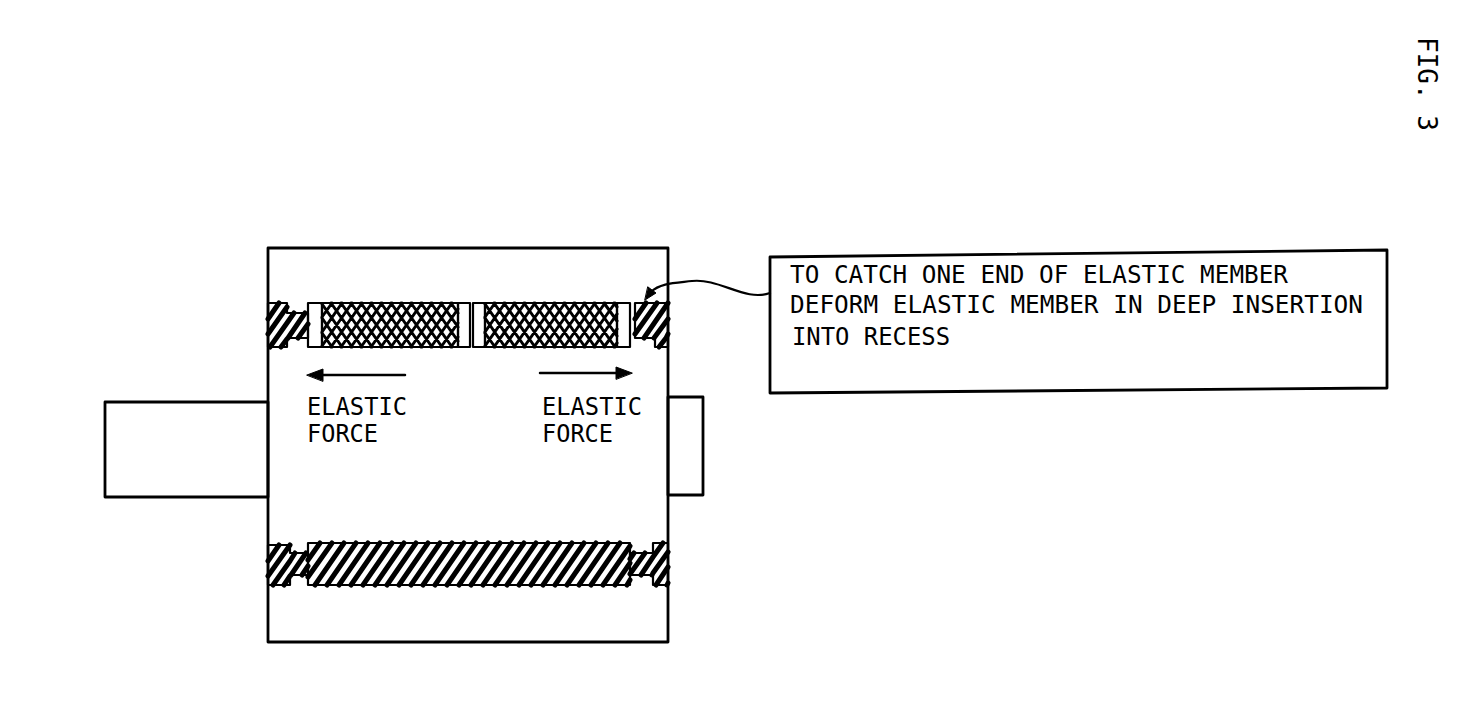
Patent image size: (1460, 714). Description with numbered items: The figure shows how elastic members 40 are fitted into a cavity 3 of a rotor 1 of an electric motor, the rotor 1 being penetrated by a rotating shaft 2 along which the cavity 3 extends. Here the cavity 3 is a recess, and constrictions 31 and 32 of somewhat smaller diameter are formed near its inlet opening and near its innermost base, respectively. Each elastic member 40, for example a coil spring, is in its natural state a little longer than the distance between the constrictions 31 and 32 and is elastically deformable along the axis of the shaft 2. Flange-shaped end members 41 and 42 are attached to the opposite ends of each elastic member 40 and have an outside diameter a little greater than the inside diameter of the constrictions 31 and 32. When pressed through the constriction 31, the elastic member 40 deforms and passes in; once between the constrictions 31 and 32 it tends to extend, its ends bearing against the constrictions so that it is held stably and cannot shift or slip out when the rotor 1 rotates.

The rotor 1 is at (380, 154).
The rotating shaft 2 is at (175, 497).
The cavity 3 is at (478, 585).
The constriction 31 is at (637, 338).
The constriction 32 is at (296, 303).
The elastic member 40 is at (402, 303).
The end member 41 is at (318, 303).
The end member 42 is at (460, 303).